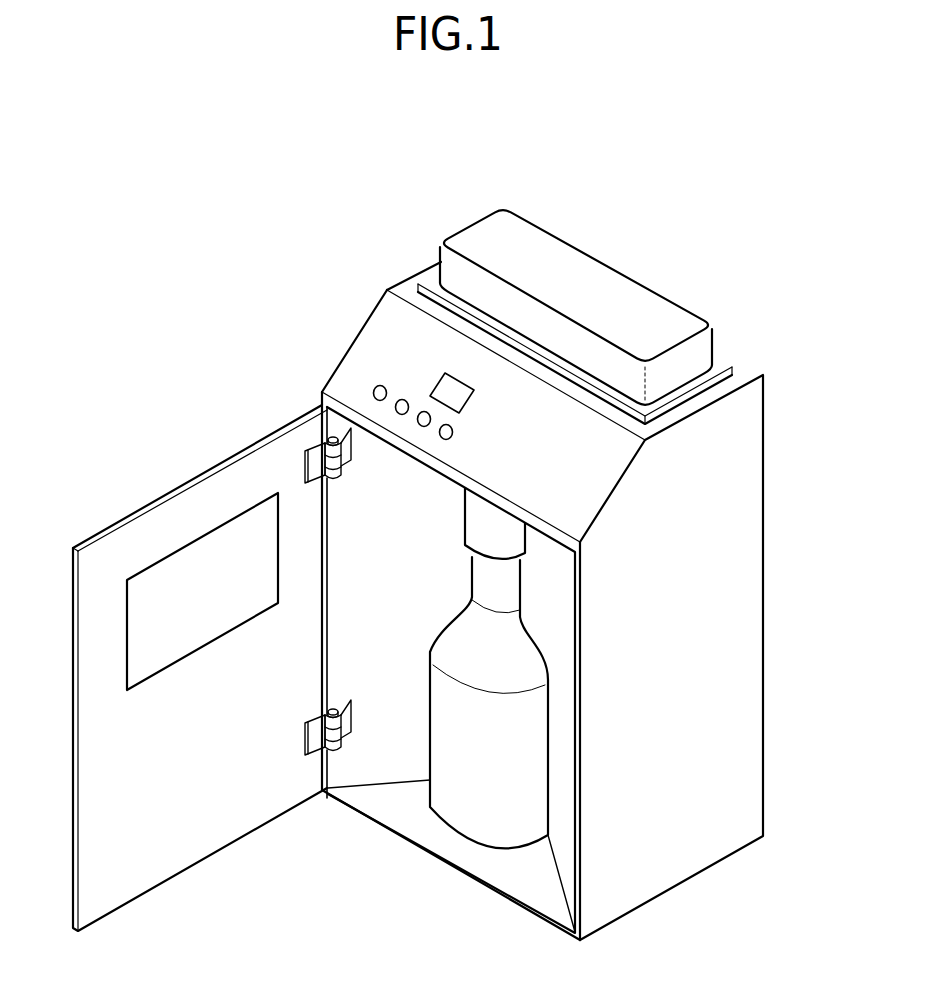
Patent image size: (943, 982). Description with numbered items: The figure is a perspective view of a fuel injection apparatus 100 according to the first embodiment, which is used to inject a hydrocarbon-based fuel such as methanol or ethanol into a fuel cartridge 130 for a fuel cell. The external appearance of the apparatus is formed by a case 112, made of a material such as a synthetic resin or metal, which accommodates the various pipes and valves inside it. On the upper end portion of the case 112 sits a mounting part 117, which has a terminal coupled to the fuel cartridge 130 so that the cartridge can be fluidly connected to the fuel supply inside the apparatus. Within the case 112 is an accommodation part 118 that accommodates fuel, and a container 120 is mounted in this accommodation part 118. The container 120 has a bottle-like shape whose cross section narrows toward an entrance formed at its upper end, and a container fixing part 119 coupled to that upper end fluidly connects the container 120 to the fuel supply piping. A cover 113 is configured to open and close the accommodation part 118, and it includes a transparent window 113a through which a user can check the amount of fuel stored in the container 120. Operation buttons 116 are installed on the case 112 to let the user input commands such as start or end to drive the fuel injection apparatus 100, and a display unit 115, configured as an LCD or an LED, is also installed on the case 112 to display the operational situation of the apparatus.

The fuel injection apparatus 100 is at (404, 172).
The case 112 is at (738, 647).
The cover 113 is at (183, 847).
The transparent window 113a is at (193, 560).
The display unit 115 is at (448, 383).
The operation buttons 116 is at (402, 404).
The mounting part 117 is at (433, 286).
The accommodation part 118 is at (421, 722).
The container fixing part 119 is at (487, 525).
The container 120 is at (477, 815).
The fuel cartridge 130 is at (590, 276).